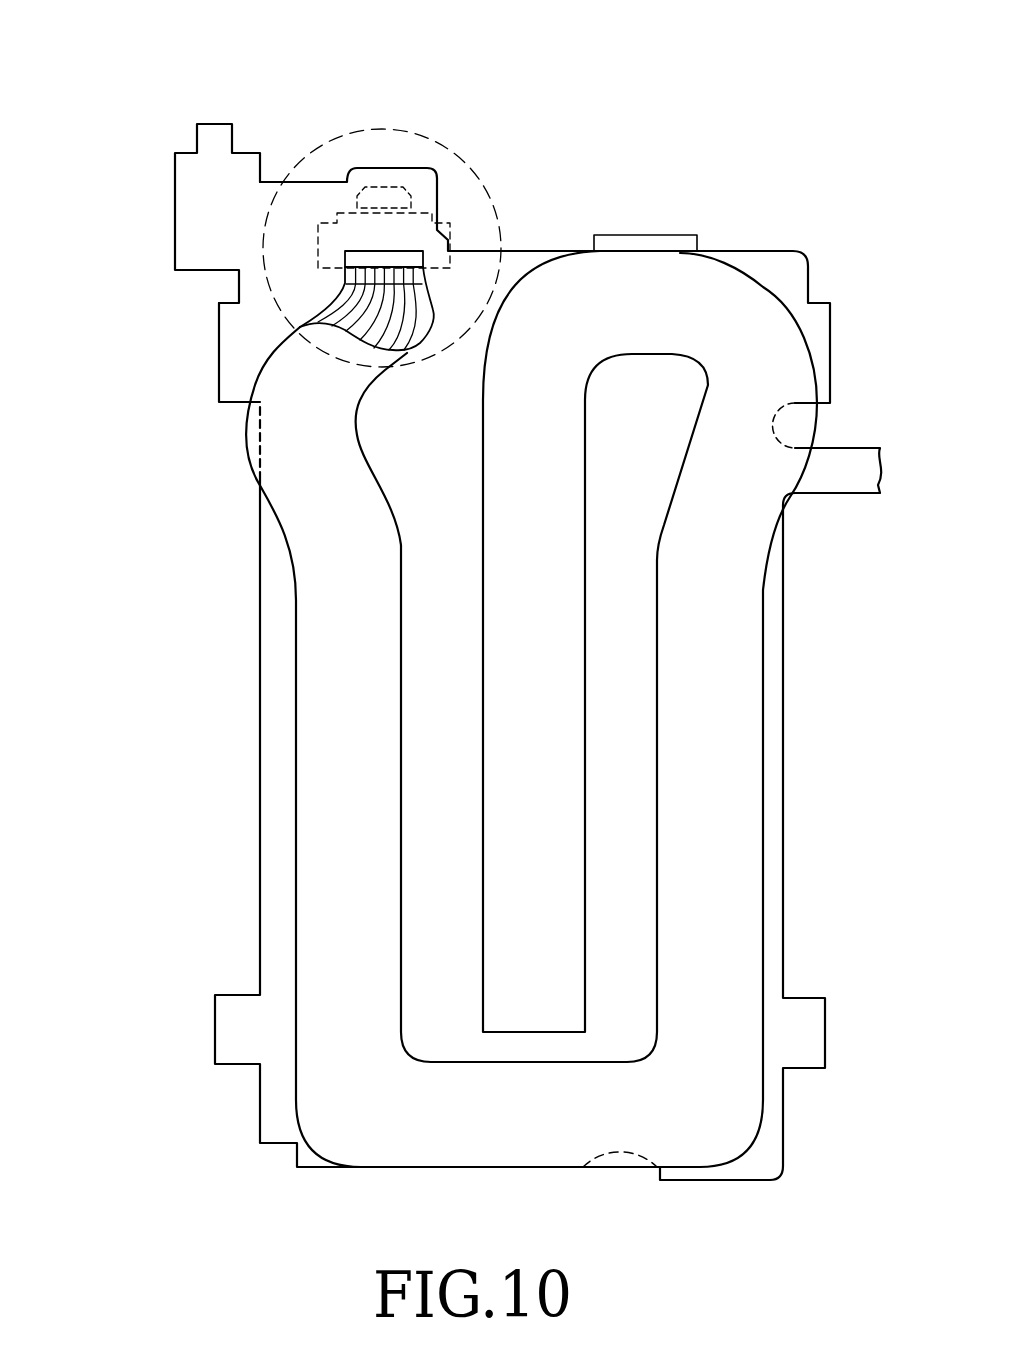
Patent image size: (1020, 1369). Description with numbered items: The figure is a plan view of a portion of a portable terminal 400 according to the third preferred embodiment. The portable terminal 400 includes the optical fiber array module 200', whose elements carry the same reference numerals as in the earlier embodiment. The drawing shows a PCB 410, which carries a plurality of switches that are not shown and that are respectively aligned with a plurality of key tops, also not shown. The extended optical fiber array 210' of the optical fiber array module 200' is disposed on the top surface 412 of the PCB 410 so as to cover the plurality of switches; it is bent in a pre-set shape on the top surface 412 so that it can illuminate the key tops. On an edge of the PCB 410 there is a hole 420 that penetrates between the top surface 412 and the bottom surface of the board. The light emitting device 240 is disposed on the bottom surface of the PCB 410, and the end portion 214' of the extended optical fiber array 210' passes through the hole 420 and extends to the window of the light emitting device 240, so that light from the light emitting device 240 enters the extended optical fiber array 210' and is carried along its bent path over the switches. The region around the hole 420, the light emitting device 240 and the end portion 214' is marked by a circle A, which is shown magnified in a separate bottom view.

The portable terminal 400 is at (433, 213).
The PCB 410 is at (262, 147).
The top surface 412 is at (190, 215).
The hole 420 is at (343, 252).
The light emitting device 240 is at (383, 185).
The optical fiber array module 200' is at (609, 681).
The extended optical fiber array 210' is at (437, 856).
The end portion 214' is at (238, 456).
The circle A is at (438, 143).